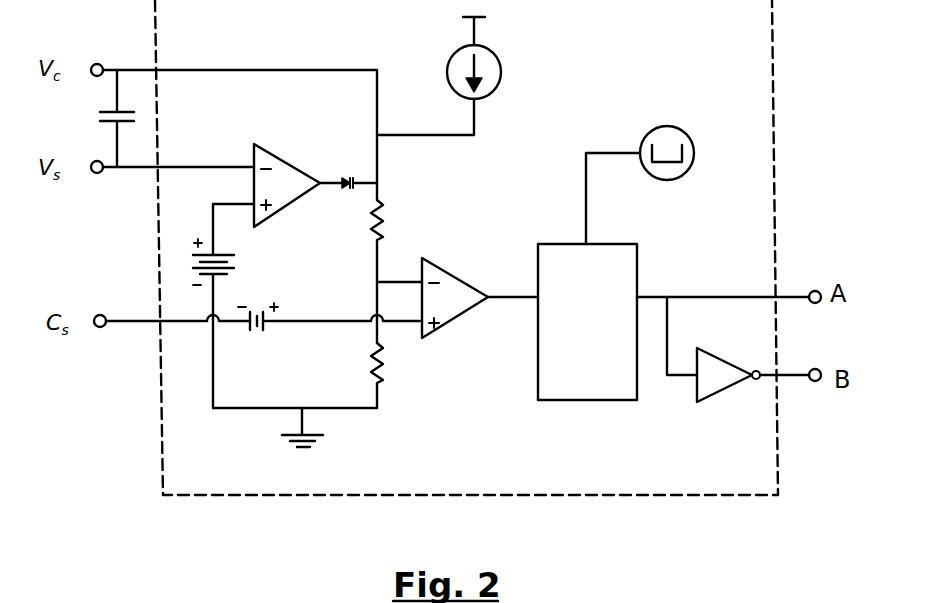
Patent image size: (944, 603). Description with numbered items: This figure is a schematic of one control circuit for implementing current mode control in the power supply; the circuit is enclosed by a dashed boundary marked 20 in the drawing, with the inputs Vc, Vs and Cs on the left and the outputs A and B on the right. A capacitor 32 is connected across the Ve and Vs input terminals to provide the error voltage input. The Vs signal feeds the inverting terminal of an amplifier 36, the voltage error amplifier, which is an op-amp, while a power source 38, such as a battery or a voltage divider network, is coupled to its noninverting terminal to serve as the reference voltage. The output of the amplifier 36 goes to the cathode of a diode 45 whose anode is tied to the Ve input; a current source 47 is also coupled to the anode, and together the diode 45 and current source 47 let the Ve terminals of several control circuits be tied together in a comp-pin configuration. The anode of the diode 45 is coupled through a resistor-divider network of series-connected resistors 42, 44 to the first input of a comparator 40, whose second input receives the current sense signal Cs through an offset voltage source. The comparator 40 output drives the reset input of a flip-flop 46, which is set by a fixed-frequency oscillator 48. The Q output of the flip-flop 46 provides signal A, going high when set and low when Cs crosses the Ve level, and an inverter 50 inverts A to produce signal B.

The control circuit 20 is at (775, 70).
The capacitor 32 is at (96, 114).
The amplifier 36 is at (289, 209).
The power source 38 is at (242, 272).
The comparator 40 is at (446, 273).
The resistor 42 is at (392, 211).
The resistor 44 is at (262, 345).
The diode 45 is at (347, 172).
The flip-flop 46 is at (587, 400).
The current source 47 is at (512, 68).
The oscillator 48 is at (668, 126).
The inverter 50 is at (716, 402).